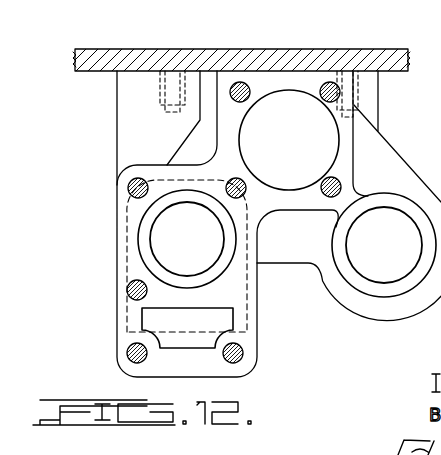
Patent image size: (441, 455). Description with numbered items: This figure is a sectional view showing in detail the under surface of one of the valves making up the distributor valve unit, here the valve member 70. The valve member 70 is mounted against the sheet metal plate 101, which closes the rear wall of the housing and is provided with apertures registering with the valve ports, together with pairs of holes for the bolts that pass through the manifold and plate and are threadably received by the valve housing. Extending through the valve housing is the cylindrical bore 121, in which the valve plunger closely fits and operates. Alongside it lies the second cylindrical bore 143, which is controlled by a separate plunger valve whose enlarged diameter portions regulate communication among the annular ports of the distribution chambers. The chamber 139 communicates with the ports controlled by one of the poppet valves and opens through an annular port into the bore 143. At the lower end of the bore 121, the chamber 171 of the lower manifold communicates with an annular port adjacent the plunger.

The sheet metal plate 101 is at (300, 62).
The chamber 139 is at (242, 163).
The cylindrical bore 121 is at (155, 266).
The cylindrical bore 143 is at (366, 278).
The chamber 171 is at (187, 328).
The valve member 70 is at (249, 310).